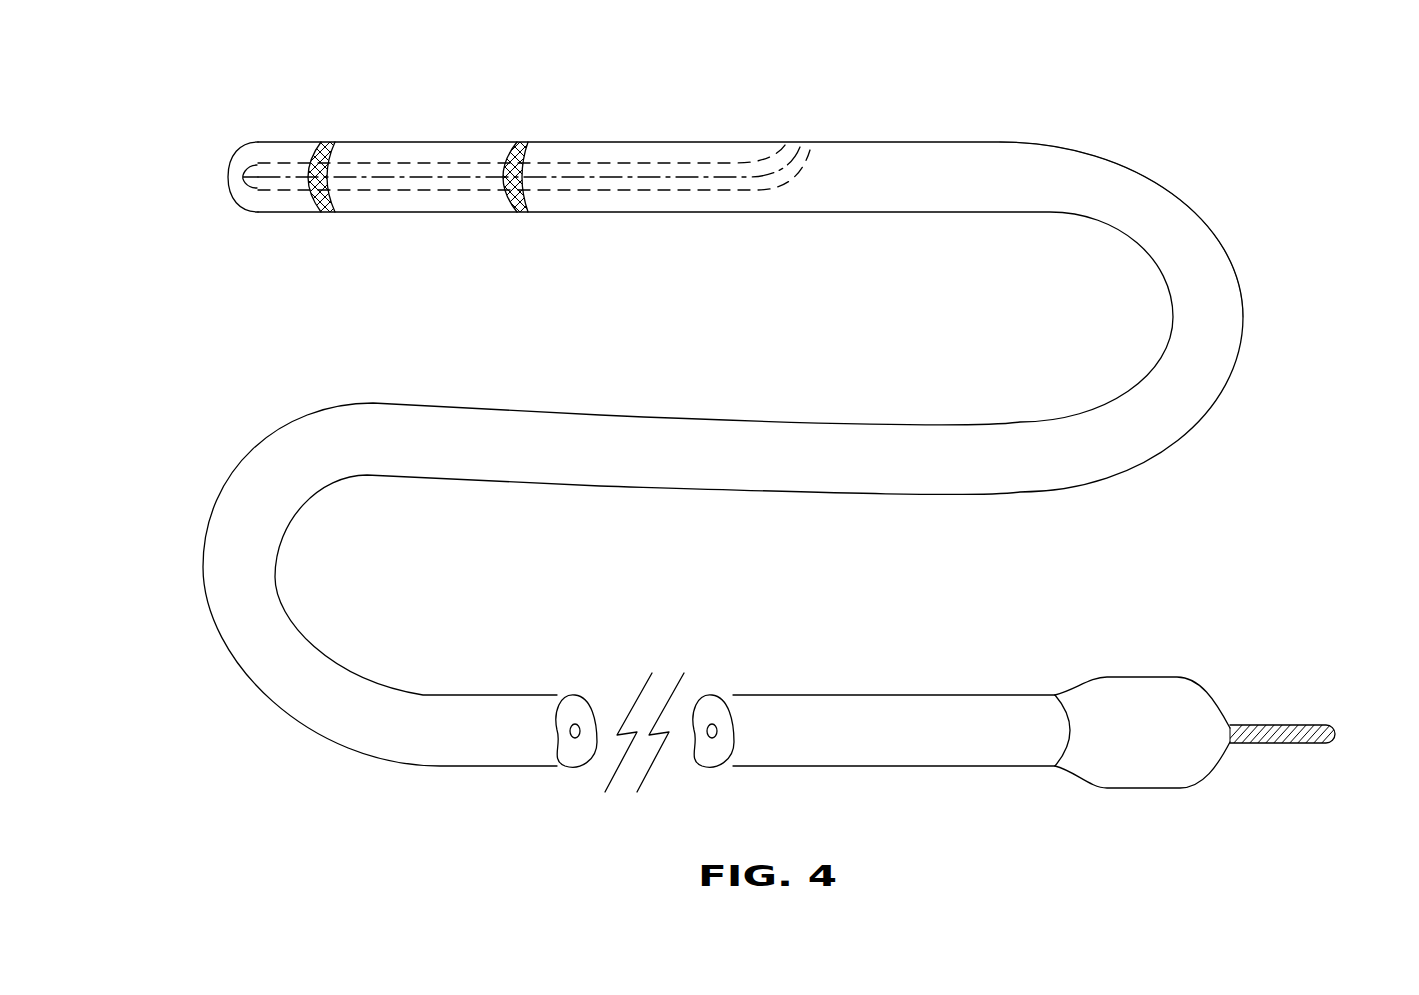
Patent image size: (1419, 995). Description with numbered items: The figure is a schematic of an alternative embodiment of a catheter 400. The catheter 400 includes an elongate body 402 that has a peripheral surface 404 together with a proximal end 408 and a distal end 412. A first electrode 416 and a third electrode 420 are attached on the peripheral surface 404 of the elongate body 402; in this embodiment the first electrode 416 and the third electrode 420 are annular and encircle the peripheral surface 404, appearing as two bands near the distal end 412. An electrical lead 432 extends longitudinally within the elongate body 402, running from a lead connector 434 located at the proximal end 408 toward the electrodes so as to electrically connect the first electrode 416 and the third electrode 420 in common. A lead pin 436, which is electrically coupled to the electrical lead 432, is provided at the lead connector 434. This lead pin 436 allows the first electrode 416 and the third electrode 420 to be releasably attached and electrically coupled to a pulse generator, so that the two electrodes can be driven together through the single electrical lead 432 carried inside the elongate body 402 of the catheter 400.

The catheter 400 is at (1022, 100).
The elongate body 402 is at (878, 143).
The peripheral surface 404 is at (1124, 164).
The proximal end 408 is at (1338, 720).
The distal end 412 is at (232, 200).
The first electrode 416 is at (331, 145).
The third electrode 420 is at (528, 147).
The electrical lead 432 is at (578, 707).
The lead connector 434 is at (1152, 790).
The lead pin 436 is at (1286, 745).